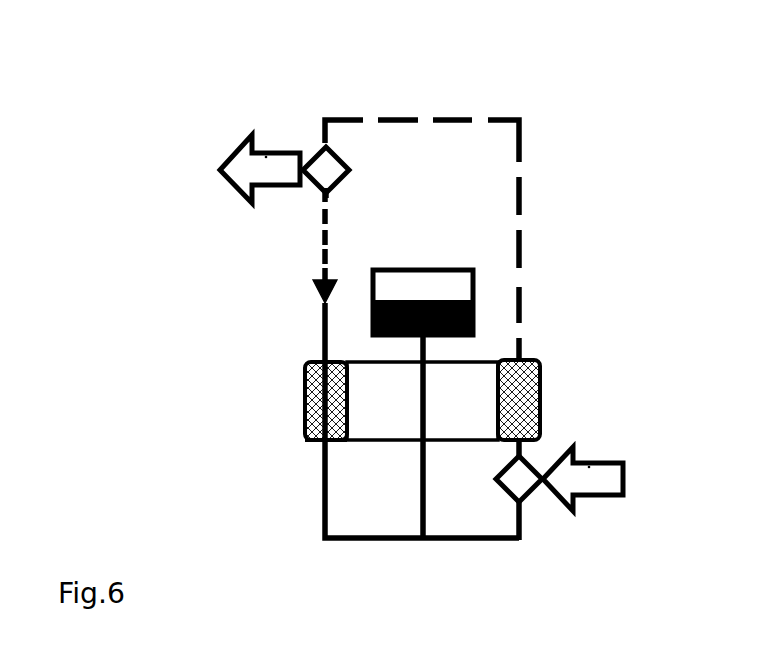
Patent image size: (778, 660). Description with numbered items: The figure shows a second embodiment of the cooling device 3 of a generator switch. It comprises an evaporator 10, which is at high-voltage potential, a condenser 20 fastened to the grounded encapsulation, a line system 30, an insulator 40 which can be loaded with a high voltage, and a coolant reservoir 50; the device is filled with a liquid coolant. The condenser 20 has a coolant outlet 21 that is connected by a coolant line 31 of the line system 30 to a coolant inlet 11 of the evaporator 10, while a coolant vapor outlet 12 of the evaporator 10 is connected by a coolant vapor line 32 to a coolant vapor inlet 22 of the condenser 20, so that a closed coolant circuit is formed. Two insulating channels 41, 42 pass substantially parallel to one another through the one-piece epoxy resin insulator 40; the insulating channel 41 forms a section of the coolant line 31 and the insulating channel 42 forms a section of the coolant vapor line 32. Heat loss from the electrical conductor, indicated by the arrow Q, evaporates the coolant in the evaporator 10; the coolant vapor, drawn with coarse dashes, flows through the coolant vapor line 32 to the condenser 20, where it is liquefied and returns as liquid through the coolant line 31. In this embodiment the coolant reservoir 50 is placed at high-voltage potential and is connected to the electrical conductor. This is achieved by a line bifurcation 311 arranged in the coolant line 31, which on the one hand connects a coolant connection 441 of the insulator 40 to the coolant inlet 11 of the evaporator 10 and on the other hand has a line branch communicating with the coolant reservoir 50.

The cooling device 3 is at (550, 99).
The evaporator 10 is at (521, 479).
The coolant inlet 11 is at (519, 501).
The coolant vapor outlet 12 is at (523, 460).
The condenser 20 is at (322, 170).
The coolant outlet 21 is at (323, 189).
The coolant vapor inlet 22 is at (326, 150).
The line system 30 is at (514, 232).
The coolant line 31 is at (322, 250).
The coolant vapor line 32 is at (523, 243).
The insulator 40 is at (453, 410).
The insulating channel 41 is at (305, 398).
The insulating channel 42 is at (542, 400).
The coolant reservoir 50 is at (410, 287).
The line bifurcation 311 is at (418, 543).
The coolant connection 441 is at (310, 440).